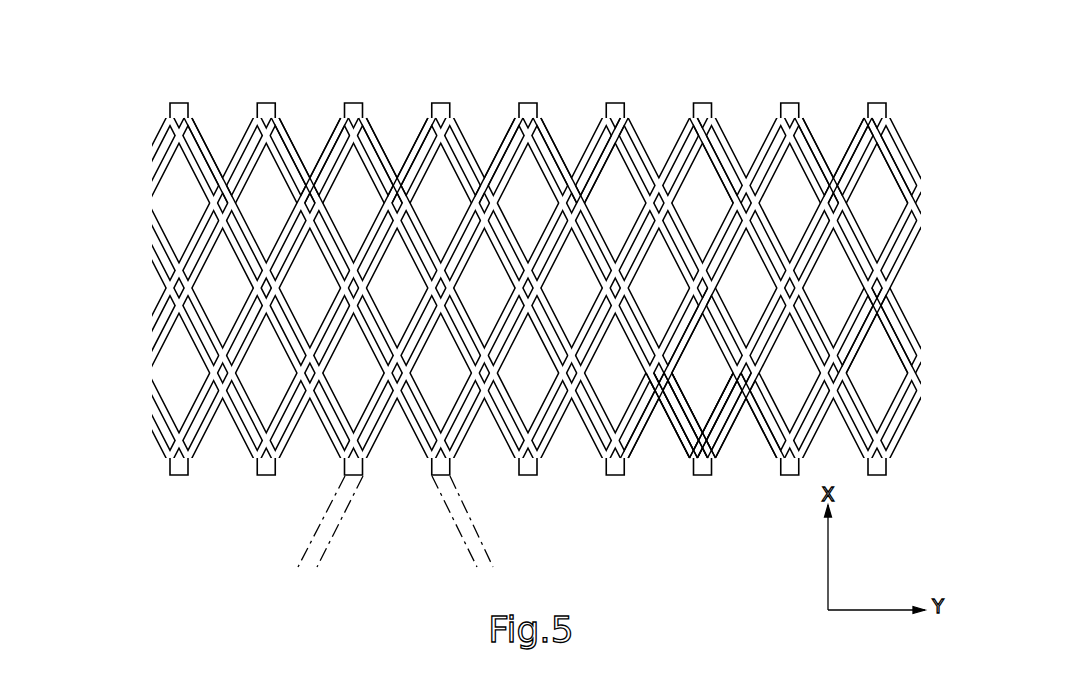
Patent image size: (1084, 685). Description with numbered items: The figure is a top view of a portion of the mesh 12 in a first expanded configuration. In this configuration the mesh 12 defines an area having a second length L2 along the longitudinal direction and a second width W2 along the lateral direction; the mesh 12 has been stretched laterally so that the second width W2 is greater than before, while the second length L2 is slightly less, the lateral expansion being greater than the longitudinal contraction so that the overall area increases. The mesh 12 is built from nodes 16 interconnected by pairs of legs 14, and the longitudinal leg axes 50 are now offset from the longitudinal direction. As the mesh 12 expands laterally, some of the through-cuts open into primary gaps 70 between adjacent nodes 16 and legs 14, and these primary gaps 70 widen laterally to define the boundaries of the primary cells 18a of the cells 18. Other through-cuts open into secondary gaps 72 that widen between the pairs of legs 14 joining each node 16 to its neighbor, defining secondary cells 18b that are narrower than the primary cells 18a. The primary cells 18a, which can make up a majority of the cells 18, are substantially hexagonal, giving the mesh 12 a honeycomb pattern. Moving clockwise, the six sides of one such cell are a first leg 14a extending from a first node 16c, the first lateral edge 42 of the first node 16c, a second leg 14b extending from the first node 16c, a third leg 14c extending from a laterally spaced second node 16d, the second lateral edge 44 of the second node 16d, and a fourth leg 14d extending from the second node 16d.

The mesh 12 is at (258, 497).
The legs 14 is at (853, 265).
The first leg 14a is at (688, 420).
The second leg 14b is at (713, 410).
The third leg 14c is at (684, 392).
The fourth leg 14d is at (685, 352).
The nodes 16 is at (837, 373).
The first node 16c is at (740, 392).
The second node 16d is at (668, 382).
The cells 18 is at (687, 173).
The primary cells 18a is at (617, 193).
The secondary cells 18b is at (420, 165).
The first lateral edge 42 is at (722, 383).
The second lateral edge 44 is at (670, 385).
The longitudinal leg axes 50 is at (317, 527).
The primary gaps 70 is at (300, 204).
The secondary gaps 72 is at (278, 42).
The second width W2 is at (890, 68).
The second length L2 is at (62, 108).